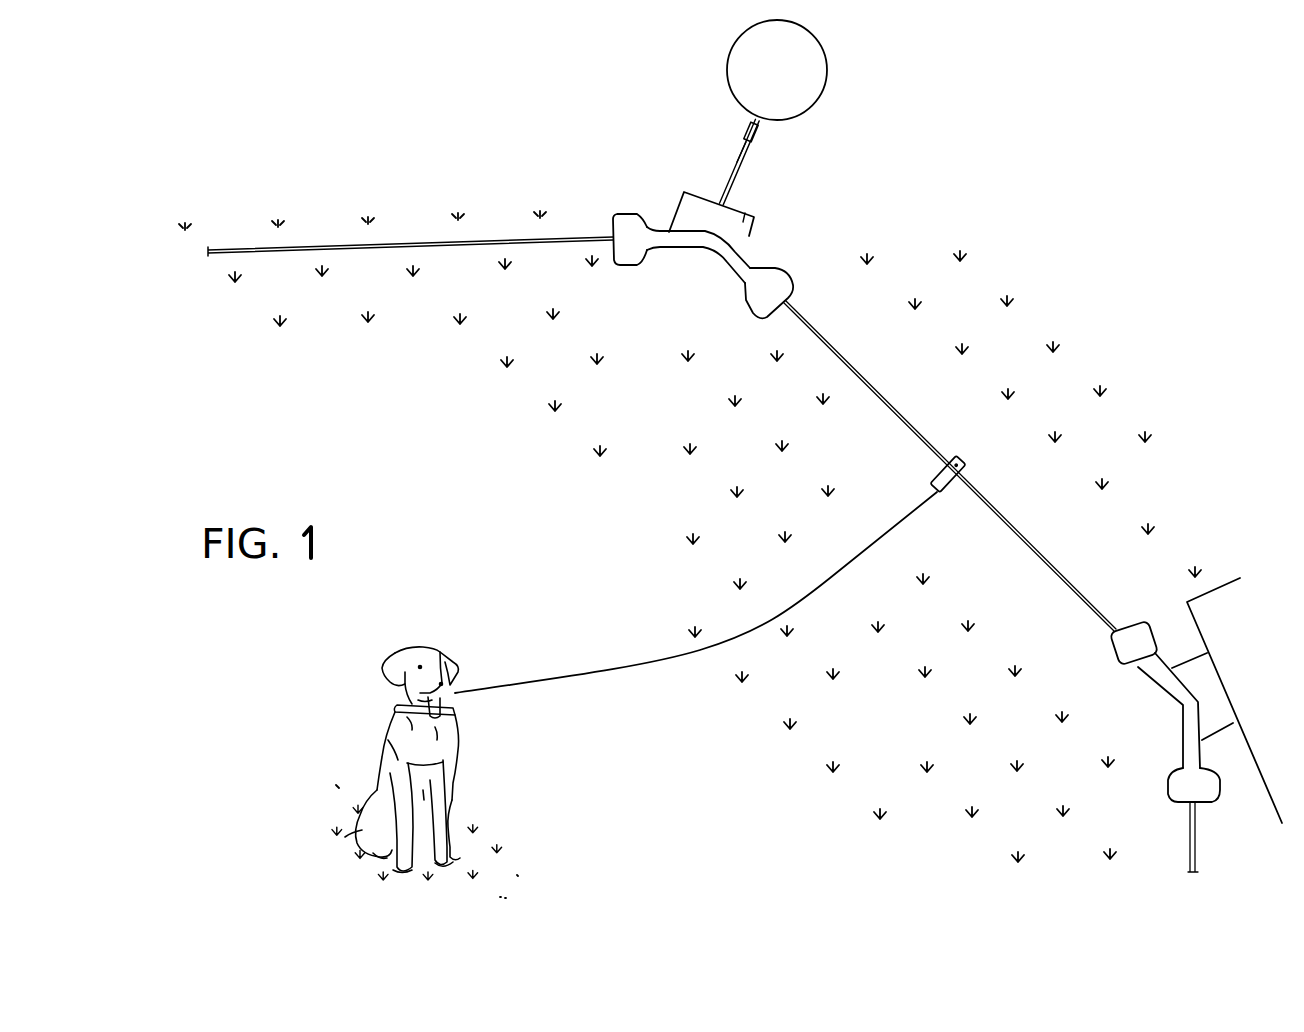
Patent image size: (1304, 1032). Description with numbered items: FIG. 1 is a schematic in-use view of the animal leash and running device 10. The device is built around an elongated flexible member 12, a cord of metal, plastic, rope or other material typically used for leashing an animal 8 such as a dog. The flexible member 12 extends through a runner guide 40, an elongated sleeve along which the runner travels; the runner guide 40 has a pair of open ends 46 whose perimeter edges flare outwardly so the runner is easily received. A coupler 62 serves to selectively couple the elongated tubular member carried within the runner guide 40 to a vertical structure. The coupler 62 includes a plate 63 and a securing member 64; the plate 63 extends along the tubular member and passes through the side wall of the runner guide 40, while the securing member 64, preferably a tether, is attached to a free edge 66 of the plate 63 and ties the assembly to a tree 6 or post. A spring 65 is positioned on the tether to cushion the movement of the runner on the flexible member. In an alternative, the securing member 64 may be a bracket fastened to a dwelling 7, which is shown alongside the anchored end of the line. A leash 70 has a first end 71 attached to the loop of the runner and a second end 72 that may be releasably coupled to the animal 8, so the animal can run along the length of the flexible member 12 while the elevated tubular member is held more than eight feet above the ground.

The tree 6 is at (798, 53).
The coupler 62 is at (713, 170).
The spring 65 is at (753, 132).
The securing member 64 is at (740, 160).
The free edge 66 is at (745, 213).
The runner guide 40 is at (733, 257).
The plate 63 is at (683, 210).
The animal leash and running device 10 is at (1087, 290).
The elongated flexible member 12 is at (338, 252).
The first end 71 is at (933, 490).
The second end 72 is at (463, 690).
The leash 70 is at (570, 676).
The animal 8 is at (443, 758).
The open ends 46 is at (1130, 623).
The dwelling 7 is at (1253, 767).